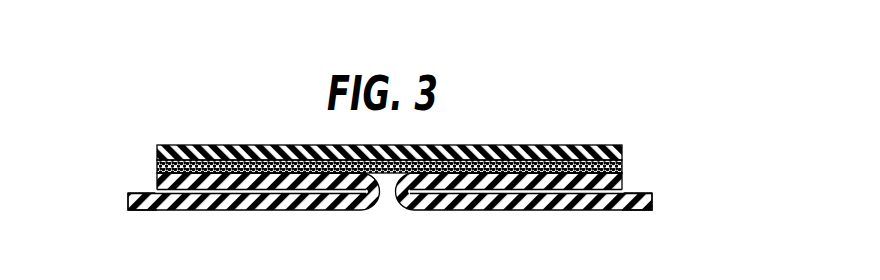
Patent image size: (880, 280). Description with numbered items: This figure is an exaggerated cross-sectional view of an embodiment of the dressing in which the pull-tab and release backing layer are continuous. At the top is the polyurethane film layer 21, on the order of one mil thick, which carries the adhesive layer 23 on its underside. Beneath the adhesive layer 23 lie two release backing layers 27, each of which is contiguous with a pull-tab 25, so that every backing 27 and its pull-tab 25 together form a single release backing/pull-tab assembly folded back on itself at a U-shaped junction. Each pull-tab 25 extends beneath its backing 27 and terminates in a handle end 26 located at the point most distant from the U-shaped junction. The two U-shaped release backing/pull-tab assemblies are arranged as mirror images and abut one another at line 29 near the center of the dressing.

The polyurethane film layer 21 is at (157, 150).
The adhesive layer 23 is at (622, 163).
The pull-tab 25 is at (257, 220).
The handle end 26 is at (150, 220).
The release backing layer 27 is at (148, 181).
The line 29 is at (386, 195).